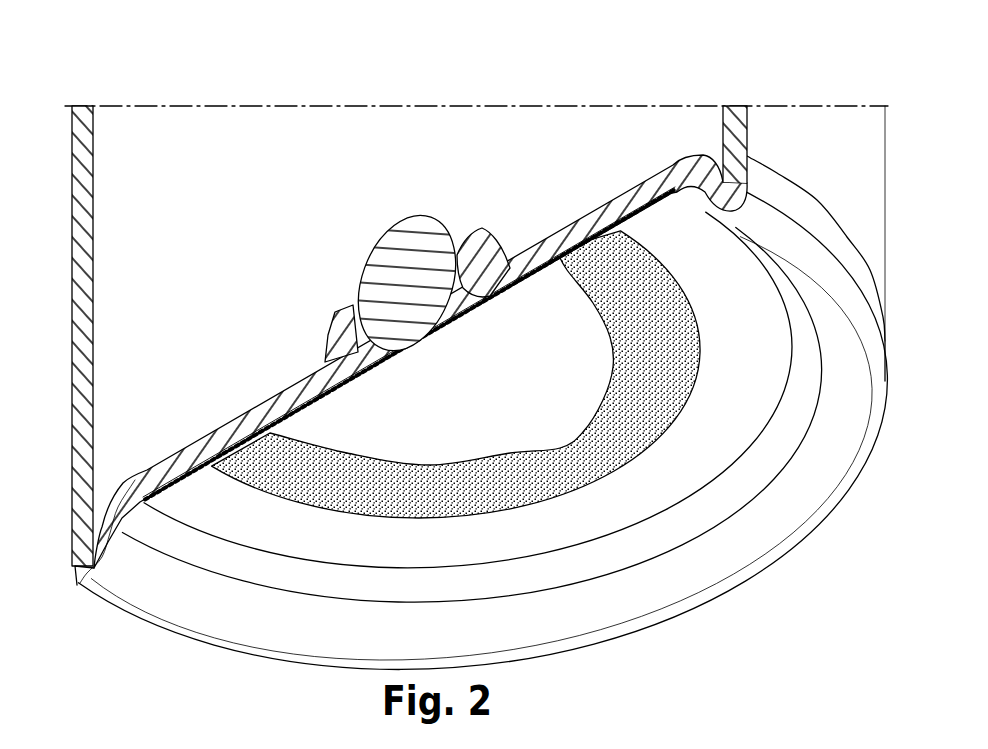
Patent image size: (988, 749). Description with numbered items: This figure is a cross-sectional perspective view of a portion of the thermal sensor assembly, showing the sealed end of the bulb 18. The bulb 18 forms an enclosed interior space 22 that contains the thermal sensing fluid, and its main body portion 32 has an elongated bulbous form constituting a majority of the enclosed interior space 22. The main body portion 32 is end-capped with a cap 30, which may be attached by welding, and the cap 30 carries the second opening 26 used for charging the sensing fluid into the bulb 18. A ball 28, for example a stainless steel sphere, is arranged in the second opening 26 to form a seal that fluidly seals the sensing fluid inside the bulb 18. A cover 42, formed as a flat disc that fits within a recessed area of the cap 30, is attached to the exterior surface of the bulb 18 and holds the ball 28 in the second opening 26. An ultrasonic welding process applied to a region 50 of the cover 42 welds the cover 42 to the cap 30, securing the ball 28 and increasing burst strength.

The bulb 18 is at (84, 80).
The enclosed interior space 22 is at (248, 143).
The second opening 26 is at (457, 248).
The ball 28 is at (398, 252).
The cap 30 is at (630, 200).
The main body portion 32 is at (732, 133).
The cover 42 is at (377, 372).
The region 50 is at (280, 470).